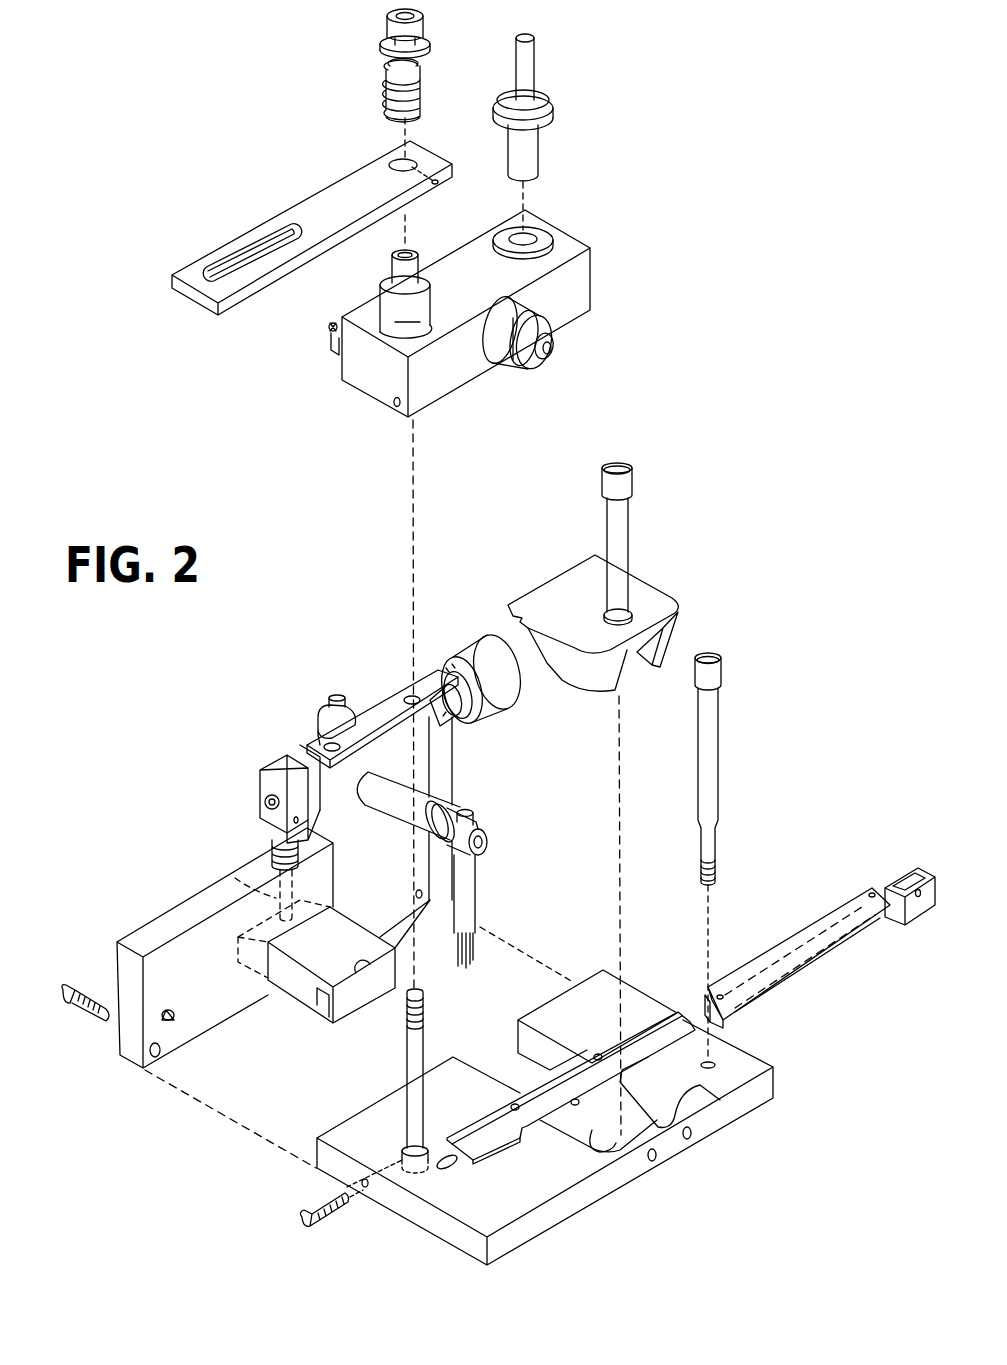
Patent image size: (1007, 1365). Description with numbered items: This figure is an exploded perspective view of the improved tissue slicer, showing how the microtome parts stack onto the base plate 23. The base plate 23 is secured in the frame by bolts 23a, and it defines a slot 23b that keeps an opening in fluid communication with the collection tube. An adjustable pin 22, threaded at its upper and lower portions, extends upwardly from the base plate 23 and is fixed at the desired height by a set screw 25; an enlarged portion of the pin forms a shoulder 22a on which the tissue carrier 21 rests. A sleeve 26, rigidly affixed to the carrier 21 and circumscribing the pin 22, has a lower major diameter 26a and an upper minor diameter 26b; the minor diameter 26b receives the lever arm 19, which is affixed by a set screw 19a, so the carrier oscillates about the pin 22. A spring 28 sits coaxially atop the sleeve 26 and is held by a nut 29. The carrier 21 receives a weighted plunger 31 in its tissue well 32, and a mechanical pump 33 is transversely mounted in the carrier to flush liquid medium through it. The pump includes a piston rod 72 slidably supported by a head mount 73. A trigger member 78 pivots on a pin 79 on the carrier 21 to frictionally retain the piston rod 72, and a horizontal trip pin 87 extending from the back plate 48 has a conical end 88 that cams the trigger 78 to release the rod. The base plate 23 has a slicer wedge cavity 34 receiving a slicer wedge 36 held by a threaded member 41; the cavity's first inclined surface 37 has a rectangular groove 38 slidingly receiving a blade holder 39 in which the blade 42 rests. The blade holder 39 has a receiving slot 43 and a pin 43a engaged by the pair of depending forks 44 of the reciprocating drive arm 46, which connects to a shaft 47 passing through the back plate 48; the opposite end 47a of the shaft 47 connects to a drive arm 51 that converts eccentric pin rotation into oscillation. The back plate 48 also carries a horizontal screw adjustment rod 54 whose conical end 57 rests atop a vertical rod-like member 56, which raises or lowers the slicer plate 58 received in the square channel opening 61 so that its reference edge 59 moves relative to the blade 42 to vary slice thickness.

The lever arm 19 is at (292, 210).
The set screw 19a is at (437, 185).
The tissue carrier 21 is at (585, 282).
The adjustable pin 22 is at (405, 1064).
The shoulder 22a is at (398, 1148).
The base plate 23 is at (537, 1232).
The bolts 23a is at (713, 727).
The slot 23b is at (455, 1170).
The set screw 25 is at (300, 1220).
The sleeve 26 is at (400, 325).
The lower major diameter 26a is at (393, 306).
The upper minor diameter 26b is at (395, 269).
The spring 28 is at (385, 80).
The nut 29 is at (385, 20).
The weighted plunger 31 is at (540, 78).
The tissue well 32 is at (530, 238).
The mechanical pump 33 is at (511, 368).
The slicer wedge cavity 34 is at (680, 1088).
The slicer wedge 36 is at (652, 592).
The first inclined surface 37 is at (600, 1135).
The rectangular groove 38 is at (665, 1030).
The blade holder 39 is at (828, 985).
The threaded member 41 is at (620, 520).
The blade 42 is at (822, 920).
The receiving slot 43 is at (906, 878).
The pin 43a is at (920, 897).
The depending forks 44 is at (468, 970).
The reciprocating drive arm 46 is at (470, 902).
The shaft 47 is at (490, 836).
The opposite end of shaft 47a is at (280, 728).
The back plate 48 is at (155, 930).
The drive arm 51 is at (294, 712).
The screw adjustment rod 54 is at (470, 640).
The rod-like member 56 is at (235, 878).
The conical end 57 is at (262, 800).
The slicer plate 58 is at (330, 965).
The reference edge 59 is at (370, 972).
The square channel opening 61 is at (530, 1037).
The piston rod 72 is at (550, 355).
The head mount 73 is at (553, 318).
The trigger member 78 is at (328, 352).
The pin 79 is at (327, 330).
The horizontal trip pin 87 is at (168, 1012).
The conical end 88 is at (174, 1022).